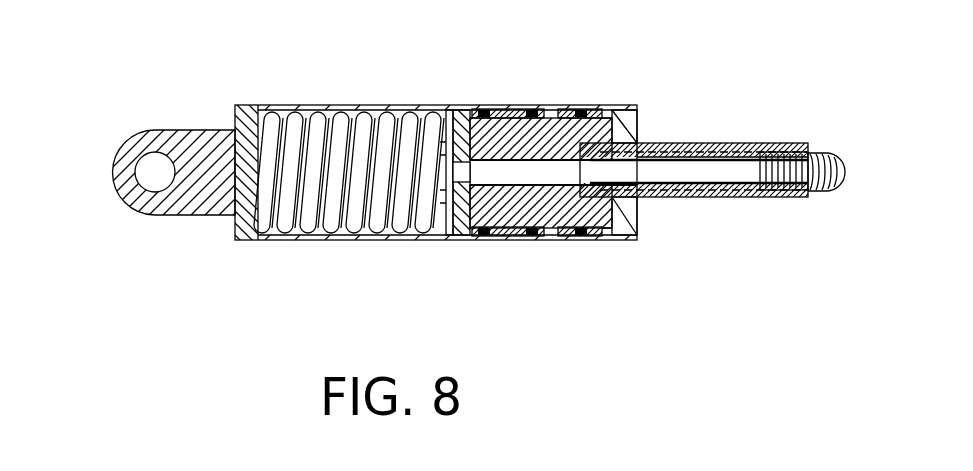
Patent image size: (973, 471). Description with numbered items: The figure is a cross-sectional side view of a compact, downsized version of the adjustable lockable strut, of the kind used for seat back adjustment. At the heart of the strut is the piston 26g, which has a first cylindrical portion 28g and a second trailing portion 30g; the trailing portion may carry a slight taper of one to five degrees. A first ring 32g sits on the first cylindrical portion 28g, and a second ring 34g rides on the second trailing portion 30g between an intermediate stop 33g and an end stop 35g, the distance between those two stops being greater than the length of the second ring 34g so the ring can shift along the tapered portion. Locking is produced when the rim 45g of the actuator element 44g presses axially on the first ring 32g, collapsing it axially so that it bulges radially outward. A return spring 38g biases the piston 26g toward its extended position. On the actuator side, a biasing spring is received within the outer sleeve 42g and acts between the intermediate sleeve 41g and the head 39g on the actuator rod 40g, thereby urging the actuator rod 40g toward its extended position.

The piston 26g is at (520, 260).
The first cylindrical portion 28g is at (455, 118).
The second trailing portion 30g is at (610, 125).
The first ring 32g is at (525, 108).
The intermediate stop 33g is at (566, 240).
The second ring 34g is at (580, 108).
The end stop 35g is at (605, 240).
The return spring 38g is at (333, 130).
The head 39g is at (848, 170).
The actuator rod 40g is at (735, 155).
The intermediate sleeve 41g is at (690, 200).
The outer sleeve 42g is at (760, 198).
The actuator element 44g is at (460, 240).
The rim 45g is at (478, 240).